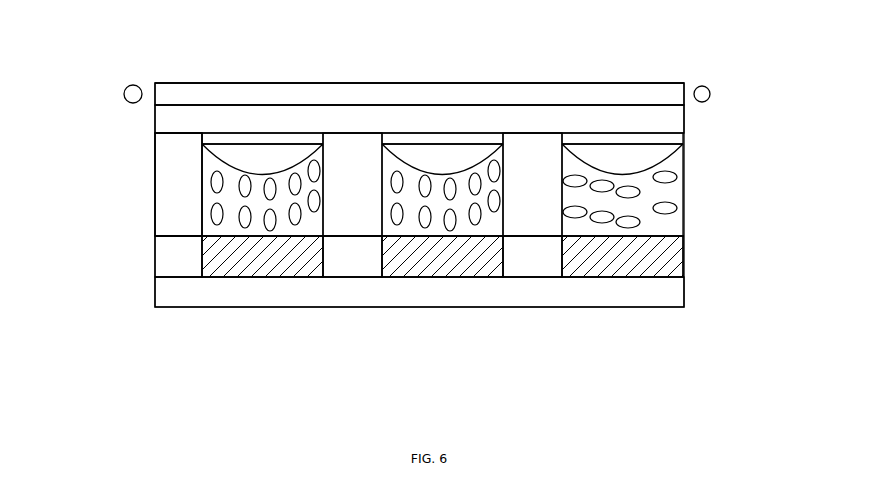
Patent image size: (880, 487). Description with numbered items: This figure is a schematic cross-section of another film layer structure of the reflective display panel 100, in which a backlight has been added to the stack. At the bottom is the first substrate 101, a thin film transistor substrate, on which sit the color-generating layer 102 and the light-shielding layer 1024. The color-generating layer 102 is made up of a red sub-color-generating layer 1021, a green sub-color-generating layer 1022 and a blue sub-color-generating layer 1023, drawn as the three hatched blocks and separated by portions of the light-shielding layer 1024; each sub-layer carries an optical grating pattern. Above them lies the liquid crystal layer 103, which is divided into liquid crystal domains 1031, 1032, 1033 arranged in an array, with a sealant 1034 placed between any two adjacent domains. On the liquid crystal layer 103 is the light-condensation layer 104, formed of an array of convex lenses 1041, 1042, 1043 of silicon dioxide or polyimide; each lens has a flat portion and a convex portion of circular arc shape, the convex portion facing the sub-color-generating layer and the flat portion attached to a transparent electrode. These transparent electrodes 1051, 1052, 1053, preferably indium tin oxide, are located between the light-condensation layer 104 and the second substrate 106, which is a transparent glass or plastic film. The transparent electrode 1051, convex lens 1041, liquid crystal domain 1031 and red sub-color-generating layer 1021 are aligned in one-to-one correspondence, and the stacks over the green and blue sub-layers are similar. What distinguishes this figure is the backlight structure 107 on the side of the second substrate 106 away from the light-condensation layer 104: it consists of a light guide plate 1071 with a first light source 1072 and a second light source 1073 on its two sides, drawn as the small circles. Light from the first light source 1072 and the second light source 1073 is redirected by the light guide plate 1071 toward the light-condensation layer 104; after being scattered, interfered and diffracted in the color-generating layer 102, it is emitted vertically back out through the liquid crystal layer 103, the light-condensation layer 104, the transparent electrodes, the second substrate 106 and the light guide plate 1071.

The reflective display panel 100 is at (140, 68).
The first substrate 101 is at (652, 292).
The color-generating layer 102 is at (419, 316).
The red sub-color-generating layer 1021 is at (612, 255).
The green sub-color-generating layer 1022 is at (430, 255).
The blue sub-color-generating layer 1023 is at (250, 253).
The light-shielding layer 1024 is at (172, 253).
The liquid crystal layer 103 is at (419, 264).
The liquid crystal domain 1031 is at (660, 195).
The liquid crystal domain 1032 is at (412, 160).
The liquid crystal domain 1033 is at (195, 188).
The sealant 1034 is at (179, 160).
The light-condensation layer 104 is at (442, 270).
The convex lens 1041 is at (593, 160).
The convex lens 1042 is at (447, 160).
The convex lens 1043 is at (250, 155).
The transparent electrode 1051 is at (643, 155).
The transparent electrode 1052 is at (500, 160).
The transparent electrode 1053 is at (301, 150).
The second substrate 106 is at (665, 118).
The backlight structure 107 is at (422, 239).
The light guide plate 1071 is at (668, 93).
The first light source 1072 is at (710, 93).
The second light source 1073 is at (122, 95).